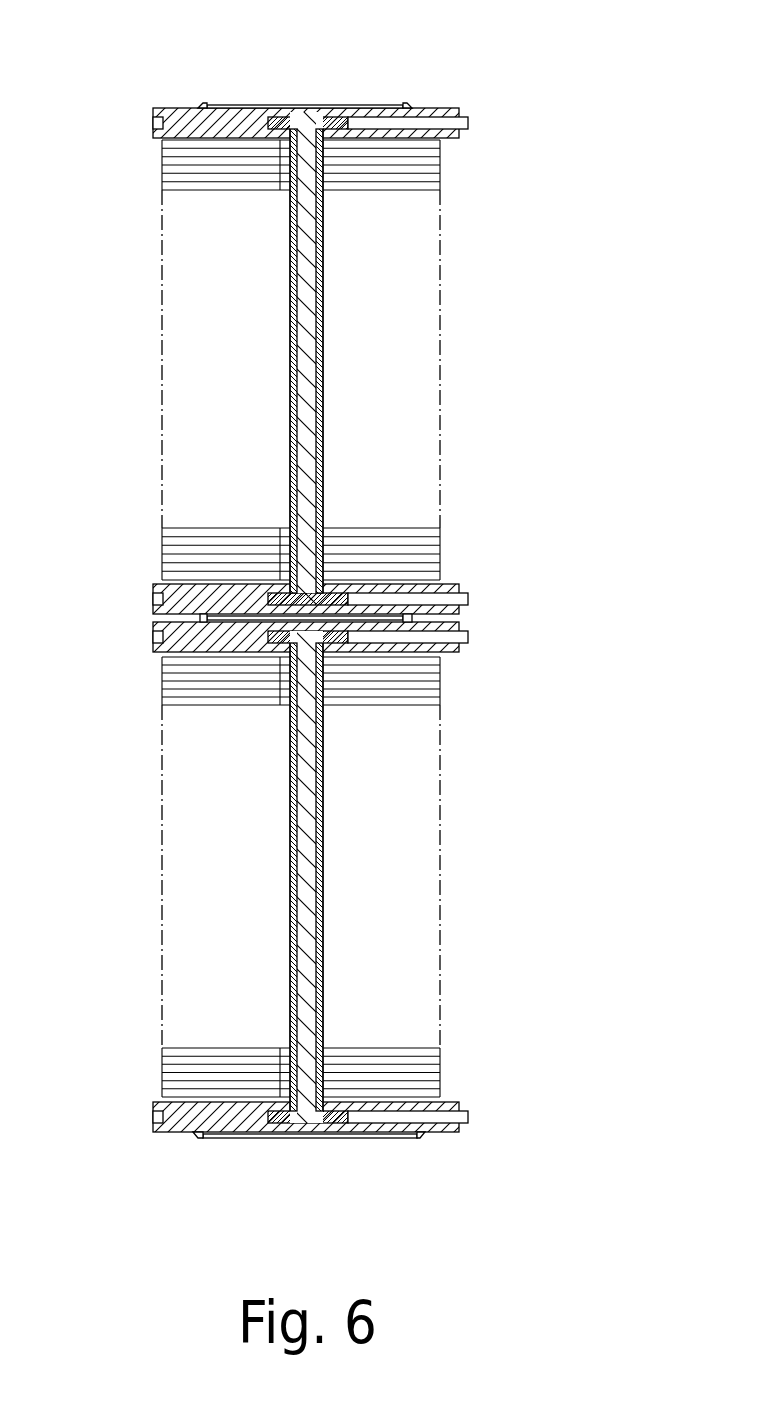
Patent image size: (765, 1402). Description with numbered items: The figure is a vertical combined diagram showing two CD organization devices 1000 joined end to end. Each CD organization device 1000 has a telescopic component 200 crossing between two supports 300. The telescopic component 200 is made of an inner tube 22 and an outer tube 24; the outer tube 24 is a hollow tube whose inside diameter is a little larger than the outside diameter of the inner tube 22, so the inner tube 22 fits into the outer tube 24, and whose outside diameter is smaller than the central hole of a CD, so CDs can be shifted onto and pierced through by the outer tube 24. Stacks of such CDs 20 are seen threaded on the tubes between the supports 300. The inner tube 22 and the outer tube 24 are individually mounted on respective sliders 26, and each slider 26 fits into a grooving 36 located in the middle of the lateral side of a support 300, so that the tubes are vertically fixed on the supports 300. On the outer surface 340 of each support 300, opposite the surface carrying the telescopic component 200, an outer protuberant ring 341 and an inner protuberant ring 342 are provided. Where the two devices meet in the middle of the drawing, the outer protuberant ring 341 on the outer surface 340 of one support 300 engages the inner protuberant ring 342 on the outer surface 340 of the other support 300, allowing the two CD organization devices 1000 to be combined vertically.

The stacked disk assembly 20 is at (433, 163).
The inner tube 22 is at (308, 912).
The outer tube 24 is at (323, 823).
The slider 26 is at (333, 635).
The grooving 36 is at (400, 635).
The telescopic component 200 is at (287, 617).
The support 300 is at (177, 110).
The outer surface 340 is at (425, 107).
The outer protuberant ring 341 is at (197, 617).
The inner protuberant ring 342 is at (203, 105).
The CD organization device 1000 is at (503, 313).